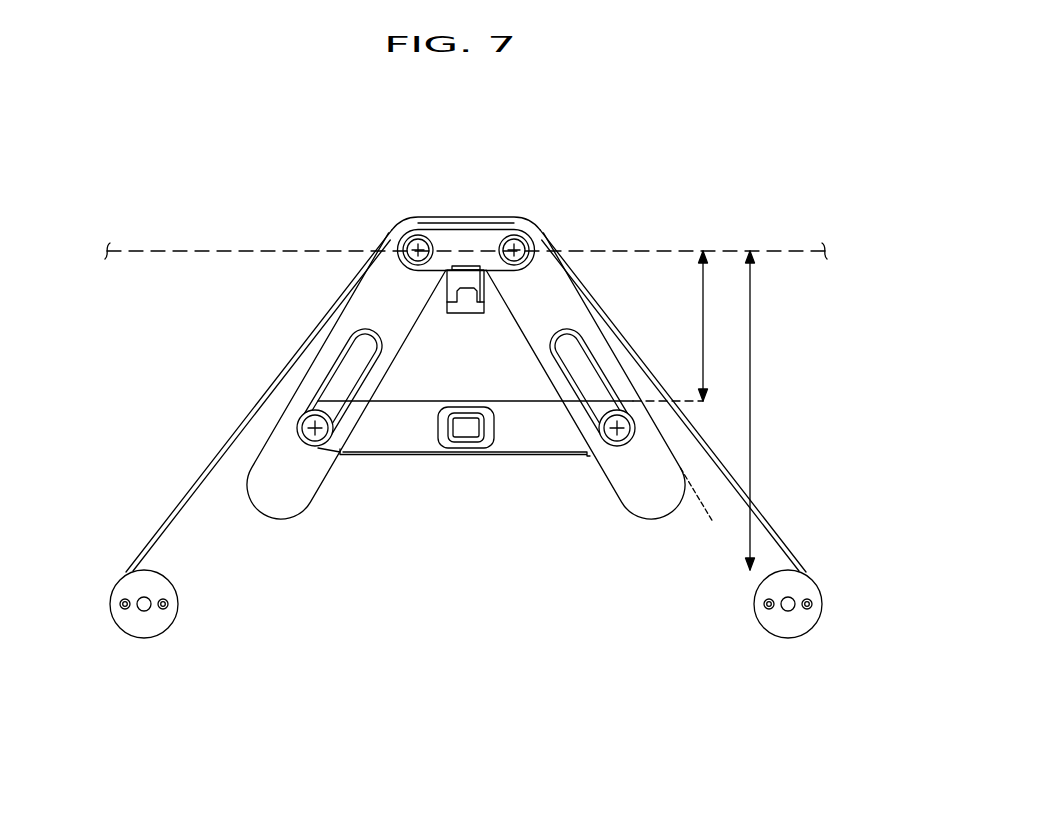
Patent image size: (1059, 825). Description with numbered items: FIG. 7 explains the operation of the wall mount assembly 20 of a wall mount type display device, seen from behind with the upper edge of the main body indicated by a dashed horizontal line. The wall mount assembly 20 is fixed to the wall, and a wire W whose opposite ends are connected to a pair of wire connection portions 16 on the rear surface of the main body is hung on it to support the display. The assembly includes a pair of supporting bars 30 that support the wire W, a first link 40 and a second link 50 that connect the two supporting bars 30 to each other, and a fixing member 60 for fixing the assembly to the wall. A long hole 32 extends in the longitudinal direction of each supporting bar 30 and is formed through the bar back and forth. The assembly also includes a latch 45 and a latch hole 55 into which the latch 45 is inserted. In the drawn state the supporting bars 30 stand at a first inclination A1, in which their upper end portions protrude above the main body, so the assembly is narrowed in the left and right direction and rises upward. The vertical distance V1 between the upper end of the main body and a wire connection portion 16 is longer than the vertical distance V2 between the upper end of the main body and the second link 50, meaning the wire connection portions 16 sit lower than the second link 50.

The wall mount assembly 20 is at (363, 175).
The wire W is at (212, 447).
The supporting bar 30 is at (308, 510).
The long hole 32 is at (343, 405).
The first link 40 is at (436, 230).
The latch 45 is at (484, 290).
The second link 50 is at (530, 457).
The latch hole 55 is at (470, 450).
The fixing member 60 is at (617, 440).
The wire connection portion 16 is at (144, 638).
The vertical distance V1 is at (761, 410).
The vertical distance V2 is at (682, 326).
The first inclination A1 is at (707, 506).